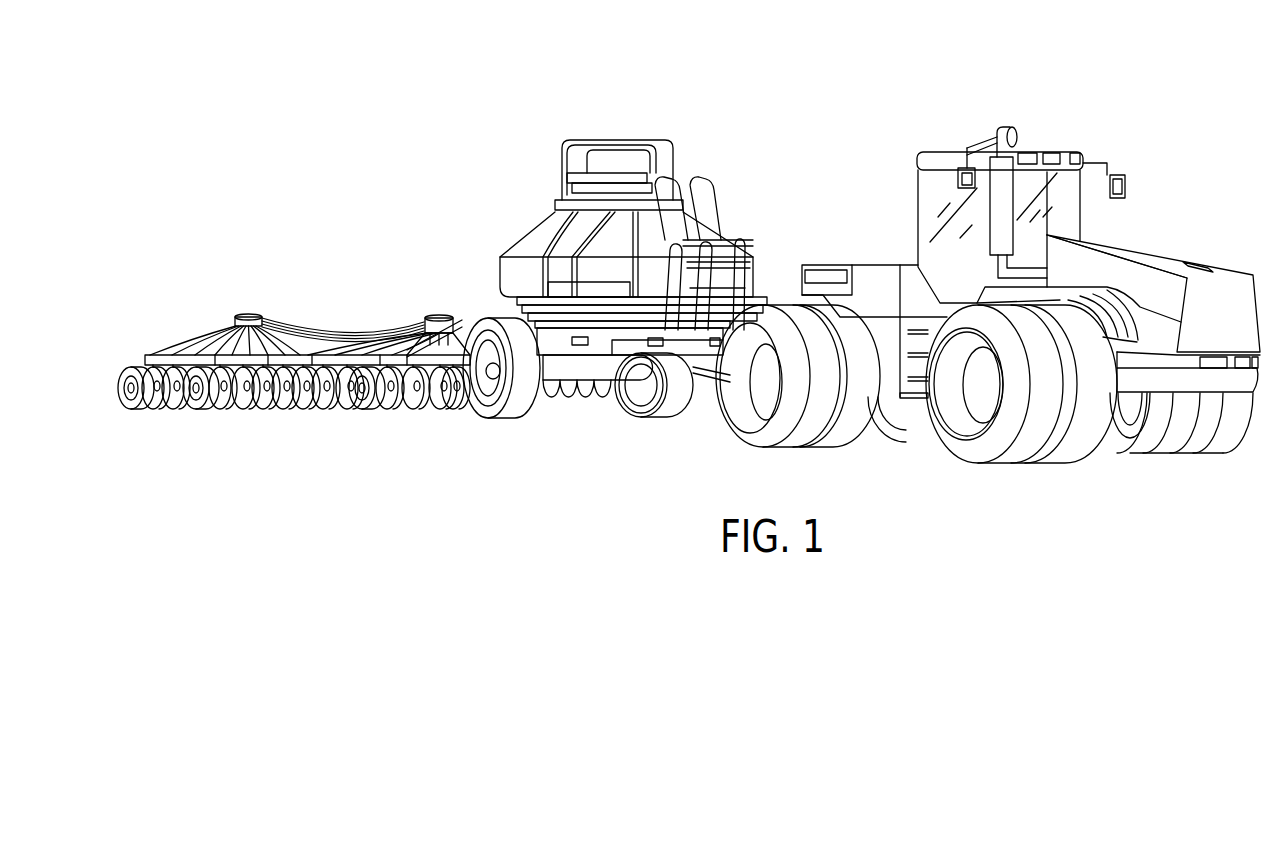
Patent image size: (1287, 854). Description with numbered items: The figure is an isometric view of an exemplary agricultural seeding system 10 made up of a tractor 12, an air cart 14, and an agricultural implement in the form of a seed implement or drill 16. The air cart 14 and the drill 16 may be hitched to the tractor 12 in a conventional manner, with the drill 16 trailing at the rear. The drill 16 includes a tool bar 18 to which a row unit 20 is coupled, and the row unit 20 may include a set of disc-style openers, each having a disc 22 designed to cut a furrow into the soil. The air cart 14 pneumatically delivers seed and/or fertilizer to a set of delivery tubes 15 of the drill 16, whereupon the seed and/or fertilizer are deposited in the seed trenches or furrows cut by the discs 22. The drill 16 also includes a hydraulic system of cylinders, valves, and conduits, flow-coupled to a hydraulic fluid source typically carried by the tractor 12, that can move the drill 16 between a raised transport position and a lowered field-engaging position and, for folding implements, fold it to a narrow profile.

The agricultural seeding system 10 is at (1212, 54).
The tractor 12 is at (1213, 246).
The air cart 14 is at (684, 130).
The delivery tubes 15 is at (298, 330).
The drill 16 is at (220, 304).
The tool bar 18 is at (360, 357).
The row unit 20 is at (432, 412).
The disc 22 is at (257, 409).